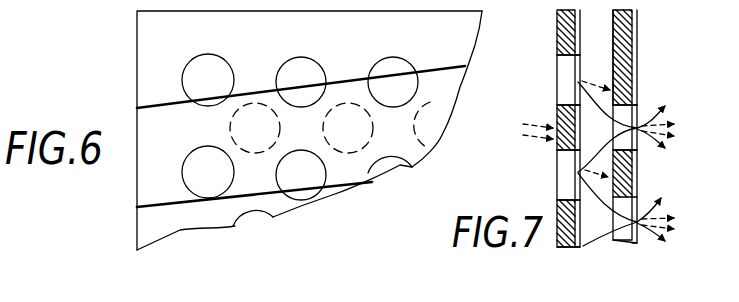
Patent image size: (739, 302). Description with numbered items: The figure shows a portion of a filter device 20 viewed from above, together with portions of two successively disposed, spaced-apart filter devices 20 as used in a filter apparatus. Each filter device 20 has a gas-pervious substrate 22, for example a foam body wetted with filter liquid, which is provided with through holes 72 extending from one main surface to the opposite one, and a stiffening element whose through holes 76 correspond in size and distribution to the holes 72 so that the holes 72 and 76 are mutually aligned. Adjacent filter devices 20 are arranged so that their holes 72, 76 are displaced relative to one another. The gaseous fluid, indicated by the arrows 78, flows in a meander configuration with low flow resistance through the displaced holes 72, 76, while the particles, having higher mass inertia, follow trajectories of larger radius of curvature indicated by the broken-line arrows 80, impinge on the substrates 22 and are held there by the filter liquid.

In FIG. 6, the filter device 20 is at (239, 298).
In FIG. 7, the filter device 20 is at (620, 246).
In FIG. 7, the gas-pervious substrate 22 is at (557, 28).
In FIG. 6, the through holes 72 is at (212, 78).
In FIG. 7, the through holes 72 is at (568, 66).
In FIG. 6, the through holes 76 is at (250, 103).
In FIG. 7, the through holes 76 is at (578, 67).
In FIG. 7, the arrows 78 is at (577, 171).
In FIG. 7, the broken-line arrows 80 is at (594, 81).